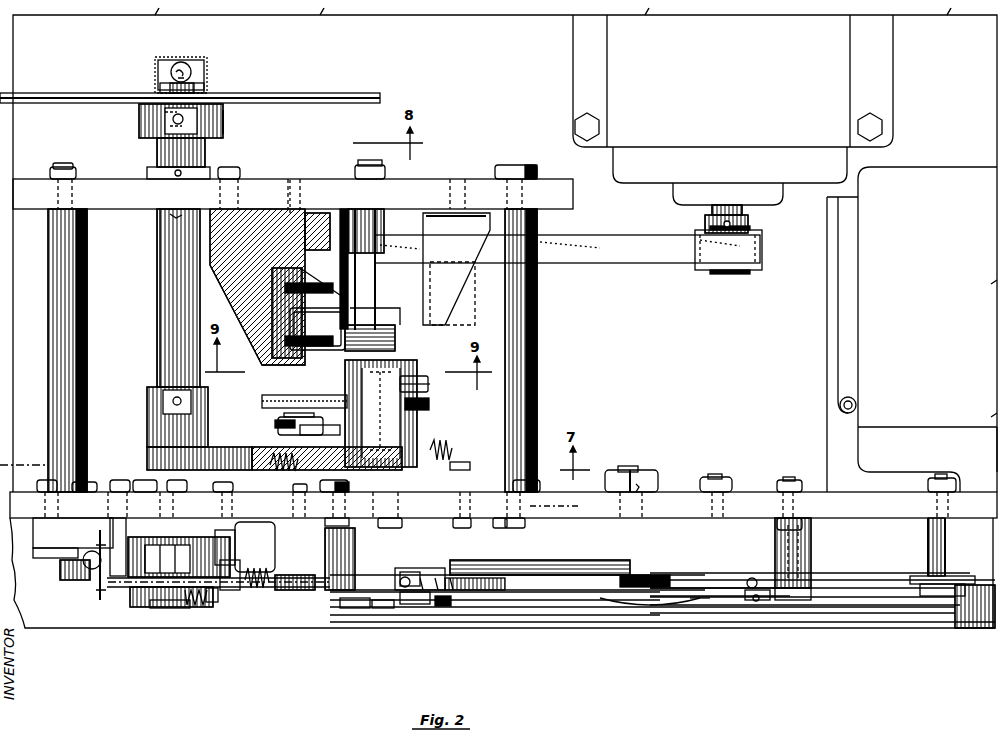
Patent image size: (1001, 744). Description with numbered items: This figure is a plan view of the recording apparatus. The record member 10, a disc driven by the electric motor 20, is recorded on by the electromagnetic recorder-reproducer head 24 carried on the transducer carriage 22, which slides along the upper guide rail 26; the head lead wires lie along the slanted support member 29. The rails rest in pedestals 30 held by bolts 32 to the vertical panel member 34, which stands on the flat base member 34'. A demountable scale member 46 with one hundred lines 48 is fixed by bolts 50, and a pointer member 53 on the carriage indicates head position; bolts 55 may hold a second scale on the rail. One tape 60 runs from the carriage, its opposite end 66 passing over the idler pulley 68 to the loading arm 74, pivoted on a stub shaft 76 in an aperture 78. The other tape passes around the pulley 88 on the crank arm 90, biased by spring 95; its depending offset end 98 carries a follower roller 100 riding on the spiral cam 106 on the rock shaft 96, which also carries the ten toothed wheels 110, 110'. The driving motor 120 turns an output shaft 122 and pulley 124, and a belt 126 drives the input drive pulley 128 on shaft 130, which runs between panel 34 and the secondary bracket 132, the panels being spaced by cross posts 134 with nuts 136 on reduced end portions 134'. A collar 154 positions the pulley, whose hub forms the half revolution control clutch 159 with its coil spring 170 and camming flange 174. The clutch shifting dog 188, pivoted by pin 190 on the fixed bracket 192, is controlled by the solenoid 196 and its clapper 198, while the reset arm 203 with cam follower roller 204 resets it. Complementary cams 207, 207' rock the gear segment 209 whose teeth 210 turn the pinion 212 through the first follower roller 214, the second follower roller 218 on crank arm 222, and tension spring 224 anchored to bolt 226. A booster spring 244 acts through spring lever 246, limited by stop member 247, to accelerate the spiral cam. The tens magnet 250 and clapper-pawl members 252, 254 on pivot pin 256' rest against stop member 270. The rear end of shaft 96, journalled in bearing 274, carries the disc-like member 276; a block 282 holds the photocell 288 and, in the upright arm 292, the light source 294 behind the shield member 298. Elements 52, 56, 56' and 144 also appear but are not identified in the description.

The movable record member 10 is at (925, 620).
The electric motor 20 is at (948, 331).
The transducer carriage 22 is at (470, 576).
The electromagnetic recorder-reproducer head 24 is at (448, 606).
The upper guide rail 26 is at (752, 578).
The slanted support member 29 is at (540, 570).
The standoff block or pedestal 30 is at (328, 592).
The bolts 32 is at (790, 480).
The panel member 34 is at (498, 483).
The flat base member 34' is at (626, 431).
The demountable scale member 46 is at (625, 602).
The lines or marks 48 is at (710, 598).
The bolts 50 is at (308, 590).
The plate 52 is at (798, 600).
The pointer member 53 is at (430, 575).
The bolts 55 is at (760, 602).
The guide 56 is at (355, 632).
The guide 56' is at (388, 628).
The tape 60 is at (830, 590).
The opposite end of tape 66 is at (870, 596).
The idler pulley or sheave 68 is at (918, 576).
The loading arm 74 is at (868, 576).
The short stub shaft 76 is at (628, 466).
The aperture 78 is at (644, 492).
The pulley or sheave 88 is at (113, 588).
The pivotal crank arm 90 is at (160, 608).
The spring 95 is at (195, 607).
The rock shaft 96 is at (157, 322).
The depending offset end 98 is at (235, 535).
The follower roller 100 is at (248, 545).
The spiral cam 106 is at (190, 545).
The ten toothed wheel 110 is at (233, 595).
The ten toothed wheel 110' is at (208, 621).
The electric driving motor 120 is at (746, 86).
The output shaft 122 is at (745, 212).
The pulley 124 is at (750, 268).
The belt 126 is at (685, 263).
The input drive pulley 128 is at (320, 225).
The shaft 130 is at (382, 215).
The secondary supporting panel or bracket 132 is at (568, 185).
The cross posts 134 is at (314, 350).
The reduced end portions 134' is at (329, 335).
The nuts 136 is at (57, 167).
The nut 144 is at (385, 165).
The collar 154 is at (425, 222).
The one half revolution control clutch 159 is at (432, 297).
The coil spring 170 is at (395, 340).
The camming flange 174 is at (350, 376).
The clutch shifting dog 188 is at (282, 270).
The pin 190 is at (292, 185).
The fixed bracket 192 is at (245, 215).
The half revolution clutch control solenoid 196 is at (400, 322).
The clapper 198 is at (343, 330).
The reset link or arm 203 is at (298, 300).
The cam follower roller 204 is at (312, 396).
The complementary cam 207 is at (320, 416).
The complementary cam 207' is at (258, 401).
The gear segment or sector 209 is at (246, 450).
The peripheral teeth 210 is at (147, 440).
The pinion 212 is at (147, 412).
The first follower roller 214 is at (278, 422).
The second follower roller 218 is at (428, 404).
The crank arm 222 is at (428, 384).
The tension spring 224 is at (445, 462).
The bolt 226 is at (464, 528).
The booster spring 244 is at (90, 575).
The spring lever 246 is at (72, 560).
The stop member 247 is at (122, 530).
The tens magnet 250 is at (170, 218).
The clapper-pawl combination member 252 is at (100, 600).
The clapper-pawl combination member 254 is at (262, 588).
The pivot pin 256' is at (271, 471).
The stop member 270 is at (82, 568).
The bearing 274 is at (140, 124).
The rotatable disc-like member 276 is at (285, 93).
The block 282 is at (157, 156).
The photocell 288 is at (224, 120).
The upright arm 292 is at (158, 70).
The light source 294 is at (184, 58).
The shield member 298 is at (162, 58).